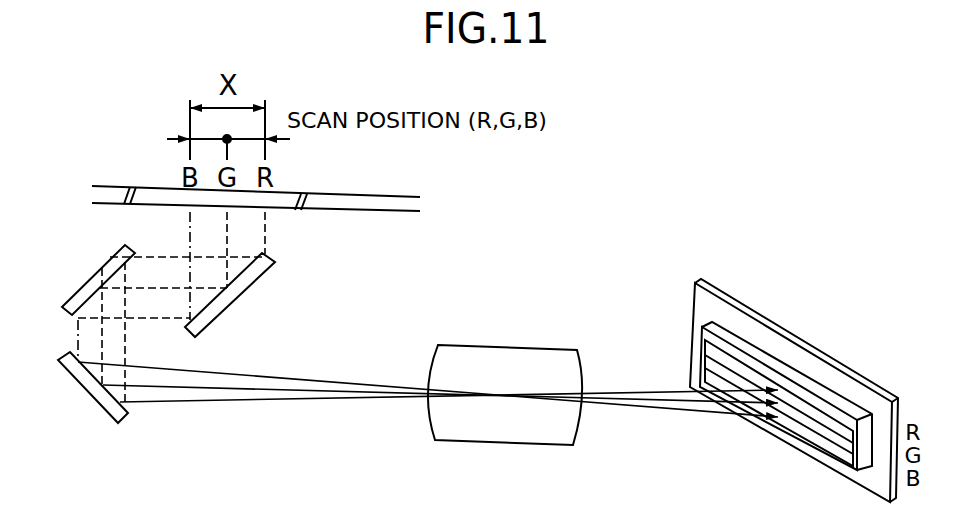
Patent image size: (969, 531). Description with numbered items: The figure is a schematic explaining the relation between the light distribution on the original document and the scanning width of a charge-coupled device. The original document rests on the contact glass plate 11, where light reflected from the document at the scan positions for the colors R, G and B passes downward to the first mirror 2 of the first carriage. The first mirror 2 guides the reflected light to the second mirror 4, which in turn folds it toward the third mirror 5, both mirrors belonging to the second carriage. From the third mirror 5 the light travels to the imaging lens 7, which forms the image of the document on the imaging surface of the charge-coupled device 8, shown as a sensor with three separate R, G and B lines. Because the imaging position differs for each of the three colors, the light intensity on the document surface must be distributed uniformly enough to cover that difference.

The contact glass plate 11 is at (400, 196).
The second mirror 4 is at (102, 272).
The first mirror 2 is at (253, 282).
The third mirror 5 is at (98, 397).
The imaging lens 7 is at (553, 352).
The charge-coupled device 8 is at (743, 311).